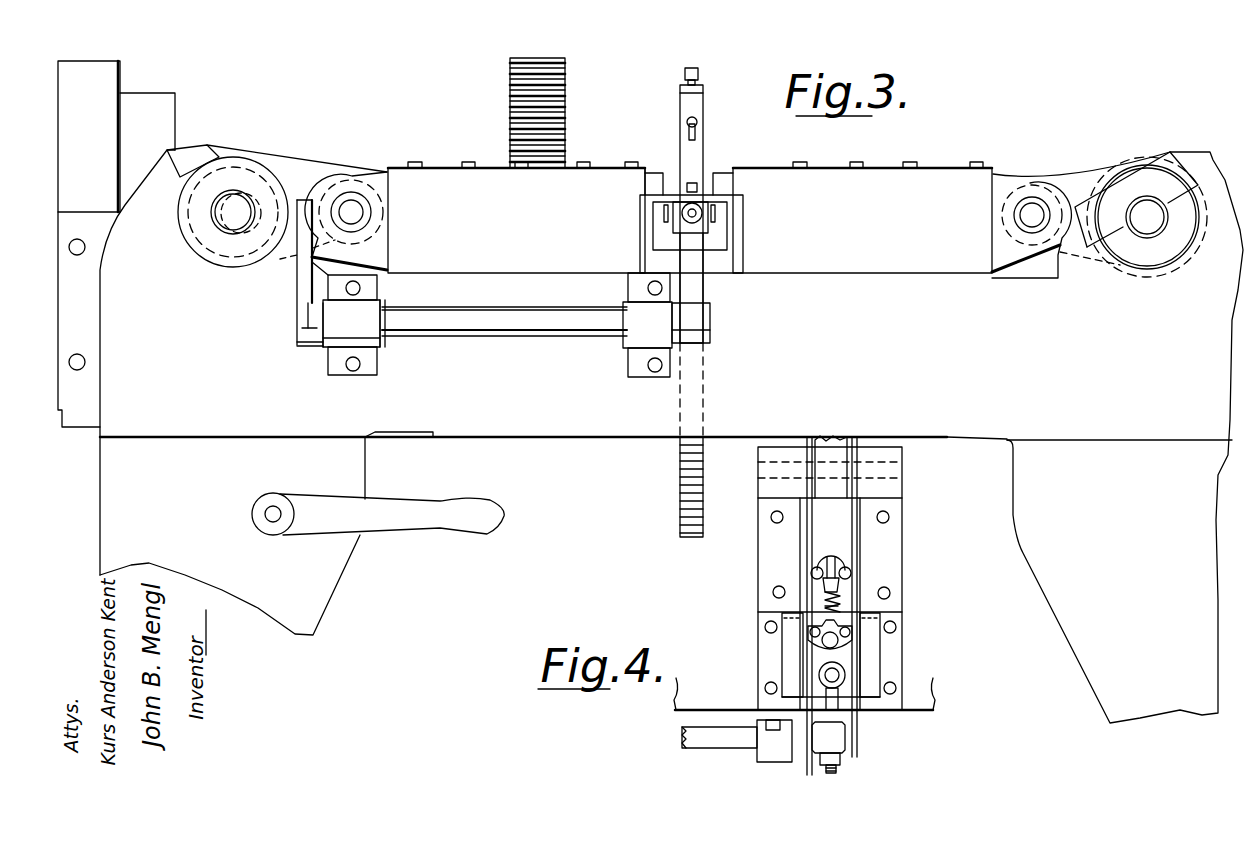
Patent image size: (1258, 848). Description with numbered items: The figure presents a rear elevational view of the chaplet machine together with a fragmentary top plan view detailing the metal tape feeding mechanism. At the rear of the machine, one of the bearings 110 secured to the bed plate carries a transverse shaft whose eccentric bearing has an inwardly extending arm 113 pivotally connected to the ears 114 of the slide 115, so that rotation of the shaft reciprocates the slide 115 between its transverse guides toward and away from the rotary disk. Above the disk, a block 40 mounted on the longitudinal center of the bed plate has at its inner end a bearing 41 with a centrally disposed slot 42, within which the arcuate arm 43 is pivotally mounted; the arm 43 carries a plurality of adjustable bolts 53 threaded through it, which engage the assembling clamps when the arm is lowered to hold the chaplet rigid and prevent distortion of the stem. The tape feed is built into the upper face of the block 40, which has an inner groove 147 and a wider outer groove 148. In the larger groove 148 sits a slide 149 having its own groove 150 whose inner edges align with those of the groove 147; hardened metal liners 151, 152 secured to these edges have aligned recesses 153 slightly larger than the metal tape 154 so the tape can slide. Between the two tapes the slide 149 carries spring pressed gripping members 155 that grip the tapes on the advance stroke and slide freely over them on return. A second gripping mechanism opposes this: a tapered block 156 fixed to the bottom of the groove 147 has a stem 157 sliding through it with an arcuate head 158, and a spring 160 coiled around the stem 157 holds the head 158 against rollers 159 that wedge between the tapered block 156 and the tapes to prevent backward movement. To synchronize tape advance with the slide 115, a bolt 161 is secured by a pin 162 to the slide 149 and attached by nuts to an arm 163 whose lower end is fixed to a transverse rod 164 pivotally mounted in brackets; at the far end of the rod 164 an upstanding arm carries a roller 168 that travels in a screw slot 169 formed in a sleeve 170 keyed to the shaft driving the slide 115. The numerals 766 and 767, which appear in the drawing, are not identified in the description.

In FIG. 3, the bearing 110 is at (650, 392).
In FIG. 3, the screw slot 169 is at (217, 158).
In FIG. 3, the sleeve 170 is at (233, 168).
In FIG. 3, the roller 168 is at (286, 200).
In FIG. 3, the inwardly extending arm 113 is at (307, 180).
In FIG. 3, the ears 114 is at (373, 182).
In FIG. 3, the slide 115 is at (432, 182).
In FIG. 3, the arcuate arm 43 is at (685, 108).
In FIG. 4, the arcuate arm 43 is at (825, 455).
In FIG. 3, the adjustable bolts 53 is at (700, 123).
In FIG. 3, the bolt 161 is at (703, 218).
In FIG. 4, the bolt 161 is at (832, 772).
In FIG. 3, the arm 163 is at (692, 288).
In FIG. 4, the arm 163 is at (835, 740).
In FIG. 3, the transverse rod 164 is at (510, 332).
In FIG. 3, the bracket 766 is at (318, 347).
In FIG. 3, the plate 767 is at (305, 283).
In FIG. 4, the slot 42 is at (851, 483).
In FIG. 4, the bearing 41 is at (893, 495).
In FIG. 4, the block 40 is at (903, 592).
In FIG. 4, the groove 147 is at (800, 530).
In FIG. 4, the hardened metal liner 151 is at (860, 548).
In FIG. 4, the arcuate head 158 is at (830, 555).
In FIG. 4, the rollers 159 is at (811, 573).
In FIG. 4, the stem 157 is at (846, 592).
In FIG. 4, the tapered block 156 is at (817, 584).
In FIG. 4, the spring 160 is at (845, 590).
In FIG. 4, the spring pressed gripping members 155 is at (891, 592).
In FIG. 4, the hardened metal liner 152 is at (803, 631).
In FIG. 4, the groove 148 is at (880, 665).
In FIG. 4, the slide 149 is at (782, 660).
In FIG. 4, the groove 150 is at (858, 652).
In FIG. 4, the recesses 153 is at (862, 658).
In FIG. 4, the pin 162 is at (847, 675).
In FIG. 4, the metal tape 154 is at (739, 755).